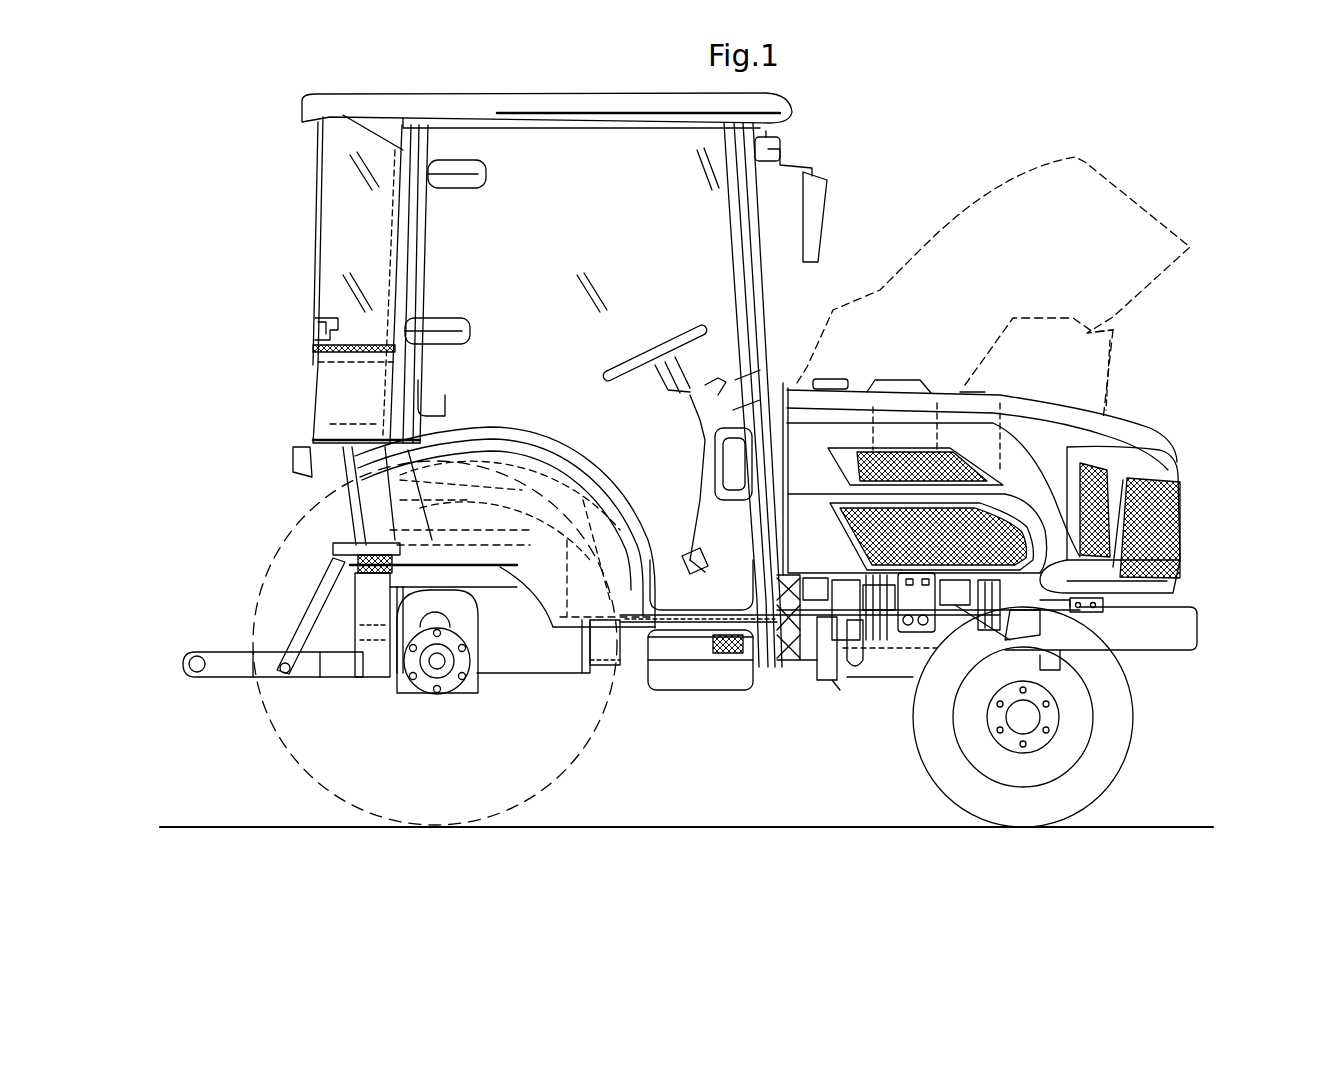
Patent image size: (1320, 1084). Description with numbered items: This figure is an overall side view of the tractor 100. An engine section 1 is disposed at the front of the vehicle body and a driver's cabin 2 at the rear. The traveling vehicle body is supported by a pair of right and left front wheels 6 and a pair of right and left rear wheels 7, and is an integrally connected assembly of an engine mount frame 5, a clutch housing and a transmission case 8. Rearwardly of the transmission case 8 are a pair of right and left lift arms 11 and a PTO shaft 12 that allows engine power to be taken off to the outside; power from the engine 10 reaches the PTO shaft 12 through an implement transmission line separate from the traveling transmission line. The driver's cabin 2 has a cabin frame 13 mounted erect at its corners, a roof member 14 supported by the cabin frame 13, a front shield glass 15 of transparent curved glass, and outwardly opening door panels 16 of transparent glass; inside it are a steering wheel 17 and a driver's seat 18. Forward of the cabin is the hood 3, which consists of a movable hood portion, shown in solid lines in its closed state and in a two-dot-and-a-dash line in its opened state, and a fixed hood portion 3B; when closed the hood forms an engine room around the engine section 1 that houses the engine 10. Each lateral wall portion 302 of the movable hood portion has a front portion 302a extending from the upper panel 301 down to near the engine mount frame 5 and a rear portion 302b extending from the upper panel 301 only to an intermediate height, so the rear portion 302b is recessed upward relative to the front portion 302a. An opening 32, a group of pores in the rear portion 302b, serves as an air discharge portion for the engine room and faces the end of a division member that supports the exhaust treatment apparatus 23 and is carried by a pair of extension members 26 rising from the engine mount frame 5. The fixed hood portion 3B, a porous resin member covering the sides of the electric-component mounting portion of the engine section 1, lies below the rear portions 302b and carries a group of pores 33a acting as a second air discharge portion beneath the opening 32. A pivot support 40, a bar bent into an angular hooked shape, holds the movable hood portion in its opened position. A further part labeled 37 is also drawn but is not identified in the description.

The tractor 100 is at (965, 155).
The engine section 1 is at (971, 378).
The driver's cabin 2 is at (297, 100).
The hood 3 is at (878, 273).
The fixed hood portion 3B is at (847, 697).
The engine mount frame 5 is at (1157, 638).
The front wheels 6 is at (1122, 752).
The rear wheels 7 is at (272, 745).
The transmission case 8 is at (518, 668).
The engine 10 is at (1003, 430).
The lift arms 11 is at (333, 517).
The PTO shaft 12 is at (338, 658).
The cabin frame 13 is at (405, 228).
The roof member 14 is at (793, 112).
The front shield glass 15 is at (770, 247).
The door panels 16 is at (597, 136).
The steering wheel 17 is at (661, 340).
The driver's seat 18 is at (468, 394).
The exhaust treatment apparatus 23 is at (893, 380).
The extension members 26 is at (908, 640).
The opening 32 is at (858, 463).
The group of pores 33a is at (1015, 528).
The hood rear edge 37 is at (797, 368).
The pivot support 40 is at (1115, 355).
The upper panel 301 is at (1050, 405).
The lateral wall portions 302 is at (1095, 428).
The front portion 302a is at (1137, 580).
The rear portion 302b is at (812, 485).